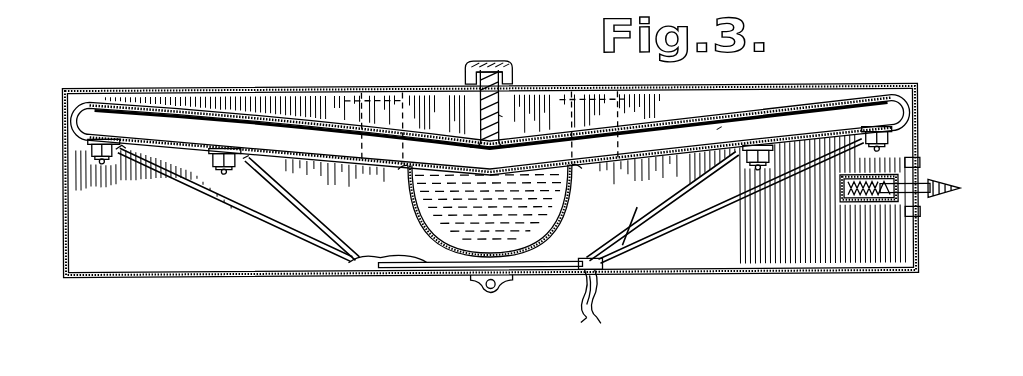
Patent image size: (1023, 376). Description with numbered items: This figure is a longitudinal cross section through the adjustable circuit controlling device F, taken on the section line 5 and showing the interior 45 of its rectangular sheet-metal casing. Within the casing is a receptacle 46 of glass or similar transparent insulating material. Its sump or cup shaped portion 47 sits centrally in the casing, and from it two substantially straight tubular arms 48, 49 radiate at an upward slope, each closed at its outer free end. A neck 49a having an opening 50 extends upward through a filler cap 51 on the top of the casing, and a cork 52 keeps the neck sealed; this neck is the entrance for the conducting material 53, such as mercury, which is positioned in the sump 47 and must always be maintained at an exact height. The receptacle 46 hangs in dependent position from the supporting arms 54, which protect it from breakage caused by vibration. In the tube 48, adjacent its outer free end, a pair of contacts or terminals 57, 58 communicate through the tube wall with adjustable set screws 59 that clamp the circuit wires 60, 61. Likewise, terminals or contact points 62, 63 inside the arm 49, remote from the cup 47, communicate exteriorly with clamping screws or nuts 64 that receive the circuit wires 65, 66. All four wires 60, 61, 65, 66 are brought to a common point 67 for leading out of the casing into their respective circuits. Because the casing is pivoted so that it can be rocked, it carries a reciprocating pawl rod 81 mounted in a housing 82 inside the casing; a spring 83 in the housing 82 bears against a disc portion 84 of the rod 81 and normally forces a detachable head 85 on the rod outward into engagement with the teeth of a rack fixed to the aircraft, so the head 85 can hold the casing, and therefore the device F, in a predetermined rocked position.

The section line 5- 5 is at (488, 0).
The interior 45 is at (752, 92).
The receptacle 46 is at (772, 101).
The sump or cup shaped portion 47 is at (410, 225).
The tubular arm 48 is at (305, 135).
The tubular arm 49 is at (728, 137).
The neck 49a is at (498, 112).
The opening 50 is at (480, 110).
The filler cap 51 is at (498, 58).
The cork 52 is at (488, 59).
The conducting material 53 is at (530, 216).
The arms 54 is at (400, 68).
The contact or terminal 57 is at (104, 136).
The contact or terminal 58 is at (224, 146).
The adjustable set screws 59 is at (103, 162).
The circuit wire 60 is at (226, 200).
The circuit wire 61 is at (312, 218).
The terminal or contact point 62 is at (875, 125).
The terminal or contact point 63 is at (756, 147).
The clamping screws or nuts 64 is at (773, 166).
The circuit wire 65 is at (703, 229).
The circuit wire 66 is at (680, 203).
The common point 67 is at (578, 286).
The reciprocating pawl rod 81 is at (922, 184).
The housing 82 is at (858, 212).
The spring 83 is at (872, 181).
The disc portion 84 is at (882, 205).
The detachable head 85 is at (950, 192).
The adjustable circuit controlling device F is at (117, 249).